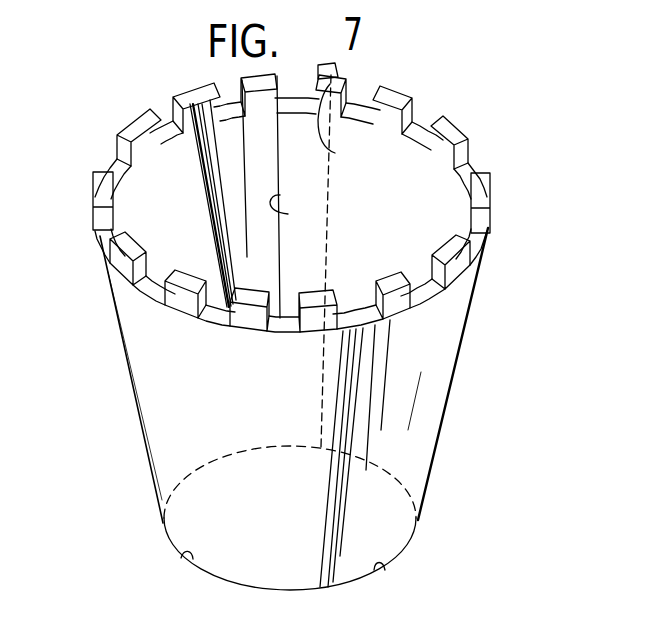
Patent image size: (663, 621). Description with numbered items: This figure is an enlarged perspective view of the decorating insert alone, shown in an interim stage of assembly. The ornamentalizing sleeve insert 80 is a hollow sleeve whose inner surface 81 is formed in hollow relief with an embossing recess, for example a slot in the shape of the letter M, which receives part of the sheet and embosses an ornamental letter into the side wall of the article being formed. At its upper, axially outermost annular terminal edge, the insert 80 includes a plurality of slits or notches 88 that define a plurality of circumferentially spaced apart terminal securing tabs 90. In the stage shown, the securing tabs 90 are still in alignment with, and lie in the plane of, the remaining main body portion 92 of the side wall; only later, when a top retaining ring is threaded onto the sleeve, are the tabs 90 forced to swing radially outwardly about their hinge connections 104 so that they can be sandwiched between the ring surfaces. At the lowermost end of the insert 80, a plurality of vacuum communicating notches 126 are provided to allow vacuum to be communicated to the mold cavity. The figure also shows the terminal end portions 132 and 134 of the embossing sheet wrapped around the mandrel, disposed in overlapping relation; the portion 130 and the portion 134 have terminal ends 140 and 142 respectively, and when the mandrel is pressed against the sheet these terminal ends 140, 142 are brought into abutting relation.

The ornamentalizing sleeve insert 80 is at (463, 347).
The inner surface 81 is at (125, 193).
The slits or notches 88 is at (115, 160).
The terminal securing tabs 90 is at (383, 283).
The main body portion of the side wall 92 is at (438, 423).
The hinge connections 104 is at (180, 300).
The vacuum communicating notches 126 is at (188, 558).
The terminal end portion 130 is at (298, 158).
The terminal end portion 132 is at (335, 67).
The terminal end portion 134 is at (335, 153).
The terminal end 140 is at (288, 214).
The terminal end 142 is at (323, 82).